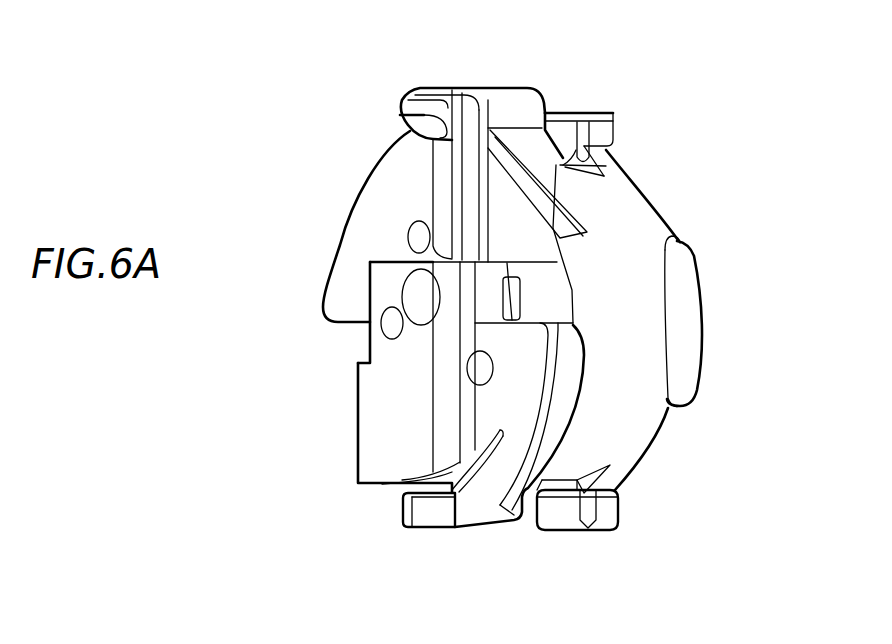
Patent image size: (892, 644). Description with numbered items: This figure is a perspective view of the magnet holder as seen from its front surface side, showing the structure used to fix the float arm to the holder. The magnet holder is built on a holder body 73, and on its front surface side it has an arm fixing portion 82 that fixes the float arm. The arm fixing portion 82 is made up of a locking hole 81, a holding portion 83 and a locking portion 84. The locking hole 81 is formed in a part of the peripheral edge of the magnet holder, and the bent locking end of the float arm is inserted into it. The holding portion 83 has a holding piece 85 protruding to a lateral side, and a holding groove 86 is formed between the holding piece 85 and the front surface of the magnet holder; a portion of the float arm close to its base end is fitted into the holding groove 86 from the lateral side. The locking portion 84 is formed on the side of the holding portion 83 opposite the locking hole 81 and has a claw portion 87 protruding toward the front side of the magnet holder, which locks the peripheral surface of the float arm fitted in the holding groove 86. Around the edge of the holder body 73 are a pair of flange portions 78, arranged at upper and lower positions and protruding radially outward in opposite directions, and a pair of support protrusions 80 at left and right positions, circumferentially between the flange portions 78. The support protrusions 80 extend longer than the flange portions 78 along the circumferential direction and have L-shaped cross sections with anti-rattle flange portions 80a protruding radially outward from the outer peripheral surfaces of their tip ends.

The holder body 73 is at (360, 143).
The flange portions 78 is at (562, 113).
The support protrusions 80 is at (702, 277).
The anti-rattle flange portions 80a is at (690, 322).
The locking hole 81 is at (424, 145).
The arm fixing portion 82 is at (443, 331).
The holding portion 83 is at (392, 428).
The locking portion 84 is at (463, 529).
The holding piece 85 is at (370, 392).
The holding groove 86 is at (428, 485).
The claw portion 87 is at (425, 518).